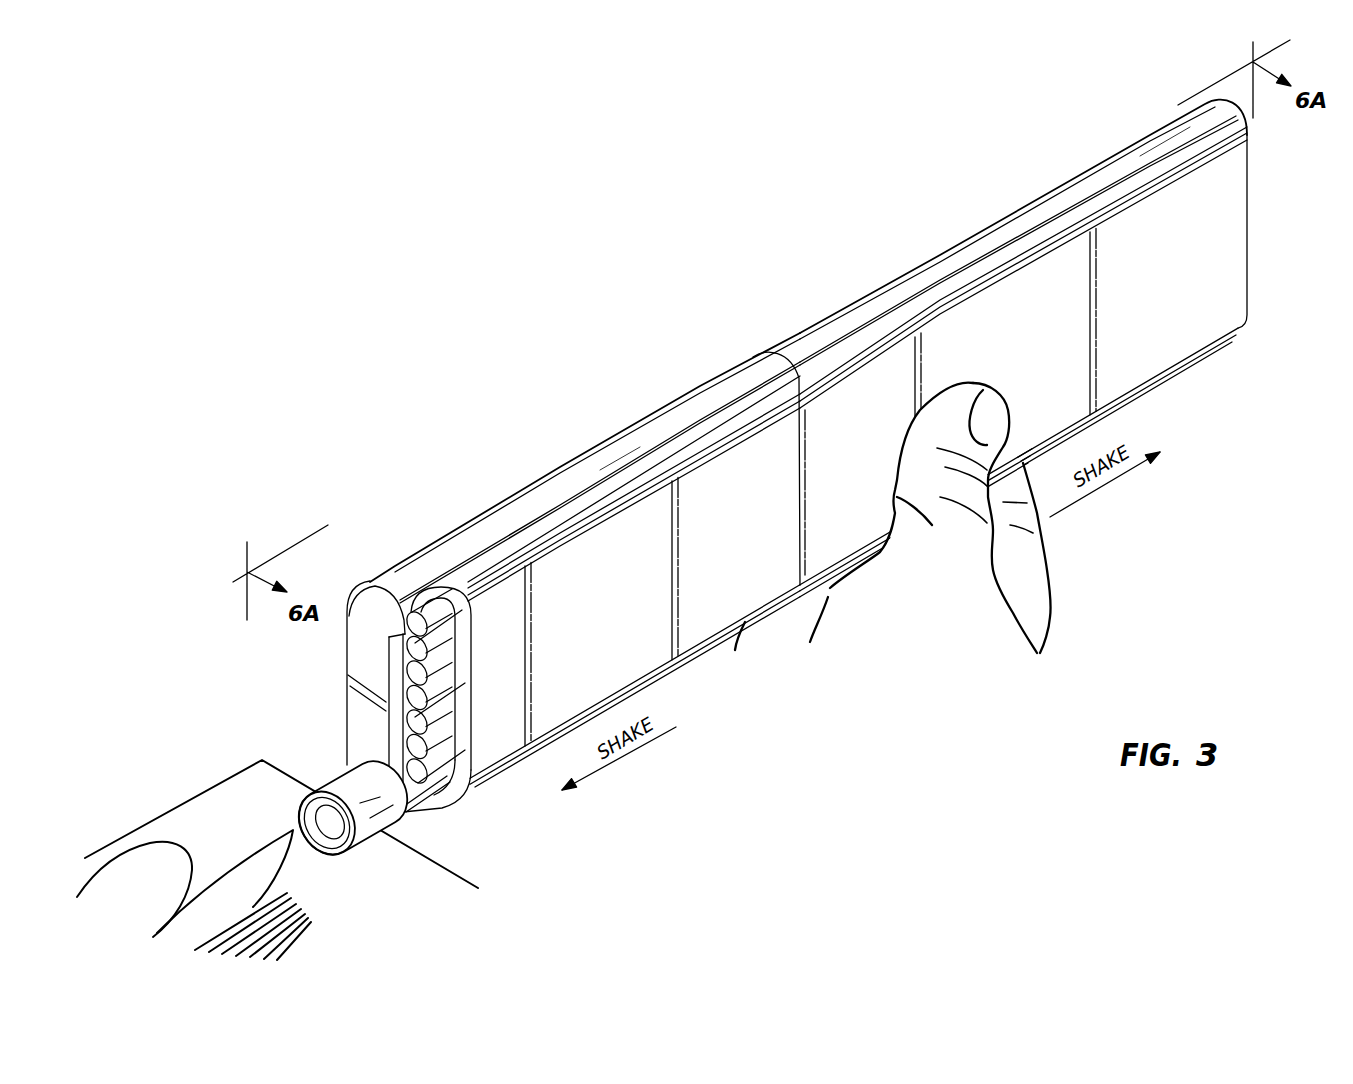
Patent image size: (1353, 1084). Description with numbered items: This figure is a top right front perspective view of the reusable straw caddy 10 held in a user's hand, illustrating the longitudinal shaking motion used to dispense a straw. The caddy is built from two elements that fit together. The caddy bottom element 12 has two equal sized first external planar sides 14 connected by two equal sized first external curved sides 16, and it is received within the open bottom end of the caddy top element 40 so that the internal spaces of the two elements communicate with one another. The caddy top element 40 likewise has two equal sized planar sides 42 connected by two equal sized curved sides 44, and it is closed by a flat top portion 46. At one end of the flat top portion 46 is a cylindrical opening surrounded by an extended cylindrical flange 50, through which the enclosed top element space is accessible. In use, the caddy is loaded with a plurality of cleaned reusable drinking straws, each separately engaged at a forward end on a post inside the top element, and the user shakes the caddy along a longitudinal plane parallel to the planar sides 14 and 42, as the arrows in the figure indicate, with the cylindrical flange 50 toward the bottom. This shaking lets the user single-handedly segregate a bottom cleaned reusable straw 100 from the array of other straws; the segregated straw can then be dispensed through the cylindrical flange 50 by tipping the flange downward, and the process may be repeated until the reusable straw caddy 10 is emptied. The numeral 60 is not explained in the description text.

The reusable straw caddy 10 is at (590, 258).
The caddy bottom element 12 is at (1177, 379).
The first external planar sides 14 is at (1193, 313).
The first external curved sides 16 is at (1086, 184).
The caddy top element 40 is at (537, 474).
The planar sides 42 is at (487, 770).
The curved sides 44 is at (633, 433).
The flat top portion 46 is at (360, 667).
The cylindrical flange 50 is at (347, 778).
The dispensing opening 60 is at (435, 785).
The cleaned reusable straw 100 is at (434, 618).